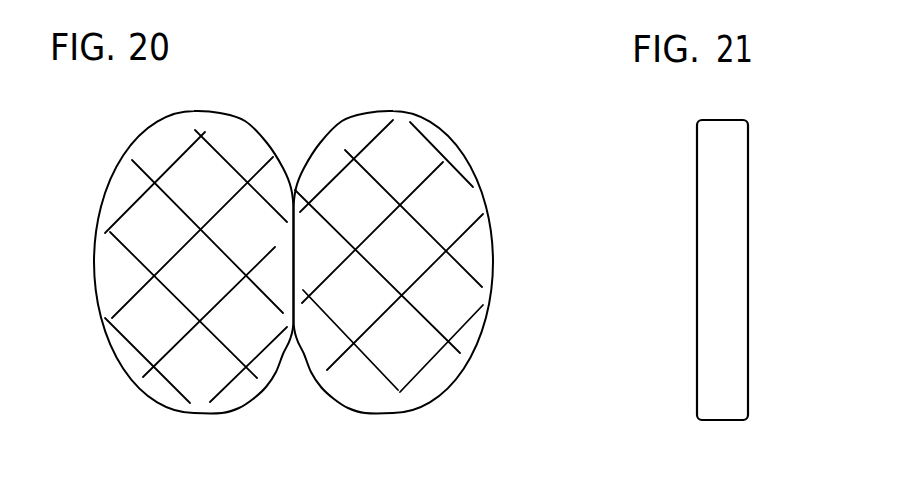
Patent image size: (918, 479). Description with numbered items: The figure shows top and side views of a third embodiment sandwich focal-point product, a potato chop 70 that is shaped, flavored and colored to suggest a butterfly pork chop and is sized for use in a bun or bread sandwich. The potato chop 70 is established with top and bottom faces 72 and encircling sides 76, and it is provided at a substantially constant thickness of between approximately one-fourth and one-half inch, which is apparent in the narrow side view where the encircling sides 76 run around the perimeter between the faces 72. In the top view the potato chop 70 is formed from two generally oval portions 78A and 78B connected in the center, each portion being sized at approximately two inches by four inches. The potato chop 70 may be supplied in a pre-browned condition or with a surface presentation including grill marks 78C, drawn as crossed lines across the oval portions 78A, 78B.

In FIG. 20, the potato chop 70 is at (294, 233).
In FIG. 21, the potato chop 70 is at (723, 250).
In FIG. 20, the top and bottom faces 72 is at (115, 180).
In FIG. 21, the top and bottom faces 72 is at (697, 180).
In FIG. 21, the encircling sides 76 is at (722, 421).
In FIG. 20, the oval portion 78A is at (235, 383).
In FIG. 20, the oval portion 78B is at (423, 383).
In FIG. 20, the grill marks 78C is at (106, 318).